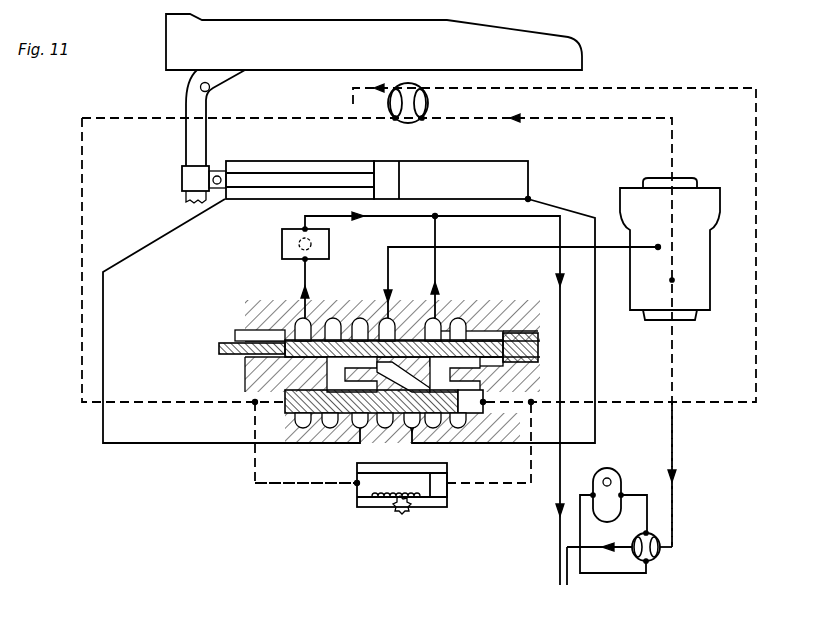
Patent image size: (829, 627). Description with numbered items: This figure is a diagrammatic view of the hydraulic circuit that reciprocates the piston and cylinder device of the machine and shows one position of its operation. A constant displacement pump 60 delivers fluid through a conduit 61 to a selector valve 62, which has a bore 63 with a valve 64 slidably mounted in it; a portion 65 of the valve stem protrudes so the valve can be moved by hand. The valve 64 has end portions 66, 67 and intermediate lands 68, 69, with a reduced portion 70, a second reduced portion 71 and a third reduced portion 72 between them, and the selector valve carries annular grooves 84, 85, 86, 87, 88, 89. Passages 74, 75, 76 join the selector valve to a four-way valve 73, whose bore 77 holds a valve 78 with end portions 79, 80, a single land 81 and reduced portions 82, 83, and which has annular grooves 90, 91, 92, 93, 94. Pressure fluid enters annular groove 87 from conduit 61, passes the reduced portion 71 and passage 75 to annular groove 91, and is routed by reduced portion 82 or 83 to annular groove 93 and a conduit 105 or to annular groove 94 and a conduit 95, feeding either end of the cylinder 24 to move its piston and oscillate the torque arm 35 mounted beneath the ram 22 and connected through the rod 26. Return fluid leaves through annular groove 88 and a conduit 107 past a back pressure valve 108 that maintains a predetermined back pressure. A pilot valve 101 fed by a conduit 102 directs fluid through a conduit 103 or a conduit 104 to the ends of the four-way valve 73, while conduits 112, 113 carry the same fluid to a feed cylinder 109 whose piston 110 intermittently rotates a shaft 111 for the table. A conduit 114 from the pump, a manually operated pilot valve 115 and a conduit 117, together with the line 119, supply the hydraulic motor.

The carriage body 22 is at (507, 28).
The torque arm 35 is at (190, 148).
The cylinder 26 is at (298, 170).
The cylinder 24 is at (470, 164).
The pilot valve 101 is at (428, 103).
The conduit 102 is at (568, 122).
The conduit 103 is at (705, 92).
The conduit 104 is at (82, 266).
The conduit 105 is at (122, 446).
The conduit 107 is at (440, 272).
The back pressure valve 108 is at (282, 248).
The constant displacement pump 60 is at (708, 190).
The conduit 61 is at (518, 247).
The selector valve 62 is at (374, 378).
The bore 63 is at (530, 333).
The valve 64 is at (249, 374).
The portion of the valve stem 65 is at (222, 343).
The end portion 66 is at (522, 363).
The end portion 67 is at (260, 330).
The intermediate land 68 is at (360, 326).
The intermediate land 69 is at (458, 324).
The reduced portion 70 is at (333, 326).
The second reduced portion 71 is at (393, 326).
The third reduced portion 72 is at (492, 328).
The four-way valve 73 is at (288, 428).
The passage 74 is at (336, 374).
The passage 75 is at (439, 374).
The passage 76 is at (466, 378).
The bore 77 is at (458, 422).
The valve 78 is at (314, 413).
The end portion 79 is at (306, 442).
The end portion 80 is at (480, 413).
The land 81 is at (385, 428).
The reduced portion 82 is at (308, 428).
The reduced portion 83 is at (412, 430).
The annular groove 84 is at (292, 338).
The annular groove 85 is at (305, 326).
The annular groove 86 is at (345, 322).
The annular groove 87 is at (398, 322).
The annular groove 88 is at (438, 322).
The annular groove 89 is at (478, 322).
The annular groove 90 is at (330, 430).
The annular groove 91 is at (386, 430).
The annular groove 92 is at (458, 430).
The annular groove 93 is at (360, 430).
The annular groove 94 is at (433, 424).
The conduit 95 is at (597, 362).
The feed cylinder 109 is at (383, 500).
The piston 110 is at (418, 495).
The shaft 111 is at (398, 514).
The conduit 112 is at (278, 484).
The conduit 113 is at (488, 488).
The conduit 114 is at (612, 472).
The pilot valve 115 is at (661, 550).
The conduit 117 is at (605, 580).
The conduit 119 is at (674, 446).